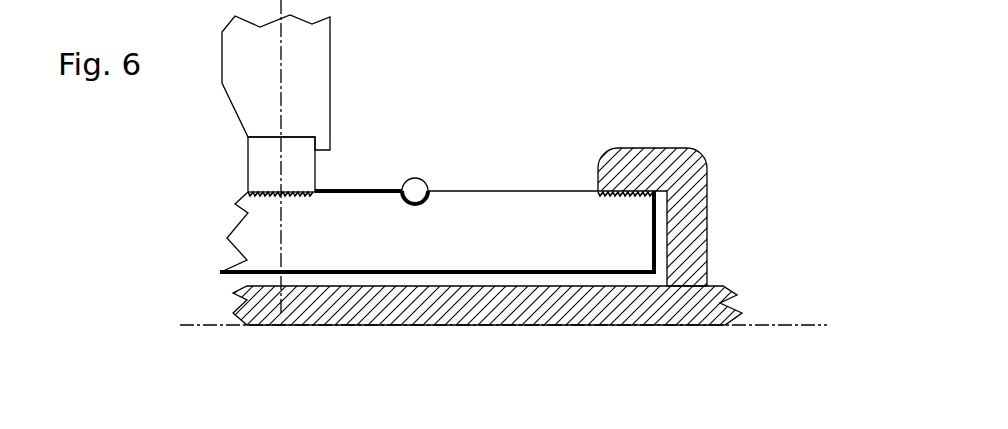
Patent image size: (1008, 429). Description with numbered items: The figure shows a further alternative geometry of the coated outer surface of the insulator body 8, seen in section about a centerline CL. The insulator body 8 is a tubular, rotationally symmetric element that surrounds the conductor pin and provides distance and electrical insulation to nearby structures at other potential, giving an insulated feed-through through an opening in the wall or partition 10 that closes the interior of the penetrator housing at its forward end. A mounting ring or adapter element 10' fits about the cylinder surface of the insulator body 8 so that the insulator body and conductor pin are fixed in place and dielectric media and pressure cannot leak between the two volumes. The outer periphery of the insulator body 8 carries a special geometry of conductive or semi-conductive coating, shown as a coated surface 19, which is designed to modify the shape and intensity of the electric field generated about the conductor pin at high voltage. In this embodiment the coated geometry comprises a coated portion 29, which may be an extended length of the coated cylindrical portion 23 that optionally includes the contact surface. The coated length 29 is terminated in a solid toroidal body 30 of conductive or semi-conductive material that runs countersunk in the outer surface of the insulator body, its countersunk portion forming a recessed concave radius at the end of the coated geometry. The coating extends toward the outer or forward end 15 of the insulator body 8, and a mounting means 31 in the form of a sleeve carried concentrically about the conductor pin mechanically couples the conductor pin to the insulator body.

The wall or partition 10 is at (306, 82).
The adapter element 10' is at (248, 163).
The coated portion 23 is at (292, 205).
The coated surface 19 is at (363, 186).
The coated portion 29 is at (362, 194).
The toroidal body 30 is at (412, 178).
The insulator body 8 is at (578, 246).
The outer or forward end 15 is at (665, 229).
The mounting means 31 is at (716, 181).
The center line CL is at (797, 325).